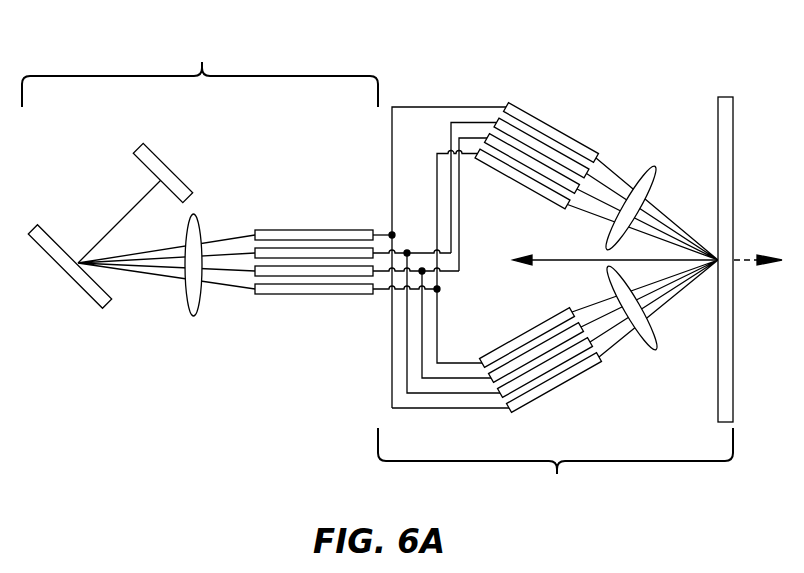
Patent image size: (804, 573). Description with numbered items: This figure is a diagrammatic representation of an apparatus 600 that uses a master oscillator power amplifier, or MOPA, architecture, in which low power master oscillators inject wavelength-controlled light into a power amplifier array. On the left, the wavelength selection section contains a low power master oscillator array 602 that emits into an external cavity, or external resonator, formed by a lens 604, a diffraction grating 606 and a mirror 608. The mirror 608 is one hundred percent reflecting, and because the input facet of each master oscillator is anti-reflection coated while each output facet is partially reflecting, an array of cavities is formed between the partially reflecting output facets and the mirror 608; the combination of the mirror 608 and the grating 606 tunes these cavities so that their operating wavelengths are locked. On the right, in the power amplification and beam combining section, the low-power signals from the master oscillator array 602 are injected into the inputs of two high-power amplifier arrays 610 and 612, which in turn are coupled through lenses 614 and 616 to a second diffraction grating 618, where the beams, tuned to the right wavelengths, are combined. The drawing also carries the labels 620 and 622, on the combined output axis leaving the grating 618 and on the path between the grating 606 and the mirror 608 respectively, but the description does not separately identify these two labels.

The apparatus 600 is at (268, 432).
The master oscillator array 602 is at (312, 230).
The lens 604 is at (193, 316).
The diffraction grating 606 is at (88, 297).
The mirror 608 is at (157, 144).
The power amplifier array 610 is at (532, 107).
The power amplifier array 612 is at (523, 334).
The lens 614 is at (656, 166).
The lens 616 is at (657, 351).
The second diffraction grating 618 is at (725, 97).
The output beam axis 620 is at (555, 259).
The beam path to mirror 622 is at (121, 217).